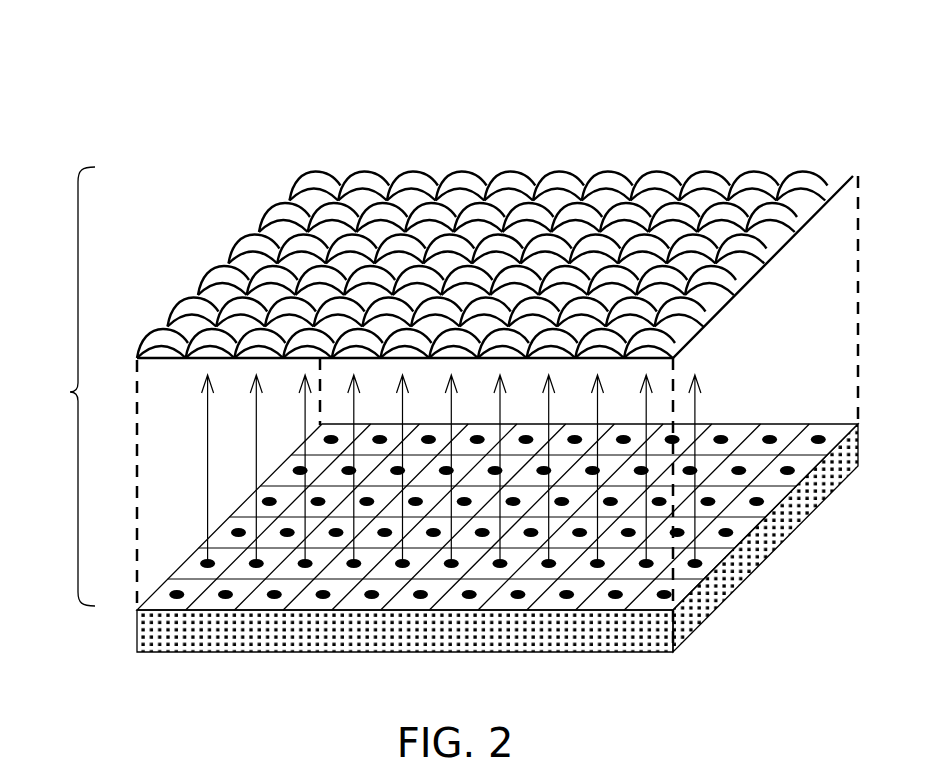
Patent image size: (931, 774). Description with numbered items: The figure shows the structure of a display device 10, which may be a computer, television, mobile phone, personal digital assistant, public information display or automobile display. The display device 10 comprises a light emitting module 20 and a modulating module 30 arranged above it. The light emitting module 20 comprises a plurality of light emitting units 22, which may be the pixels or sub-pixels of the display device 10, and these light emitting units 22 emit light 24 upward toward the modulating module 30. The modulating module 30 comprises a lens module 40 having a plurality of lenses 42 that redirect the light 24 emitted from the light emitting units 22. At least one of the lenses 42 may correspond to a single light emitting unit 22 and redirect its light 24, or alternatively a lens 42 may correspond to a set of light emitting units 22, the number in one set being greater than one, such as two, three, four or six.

The display device 10 is at (213, 80).
The light emitting module 20 is at (187, 633).
The light emitting units 22 is at (821, 438).
The light 24 is at (205, 468).
The modulating module 30 is at (70, 392).
The lens module 40 is at (772, 290).
The lenses 42 is at (288, 215).